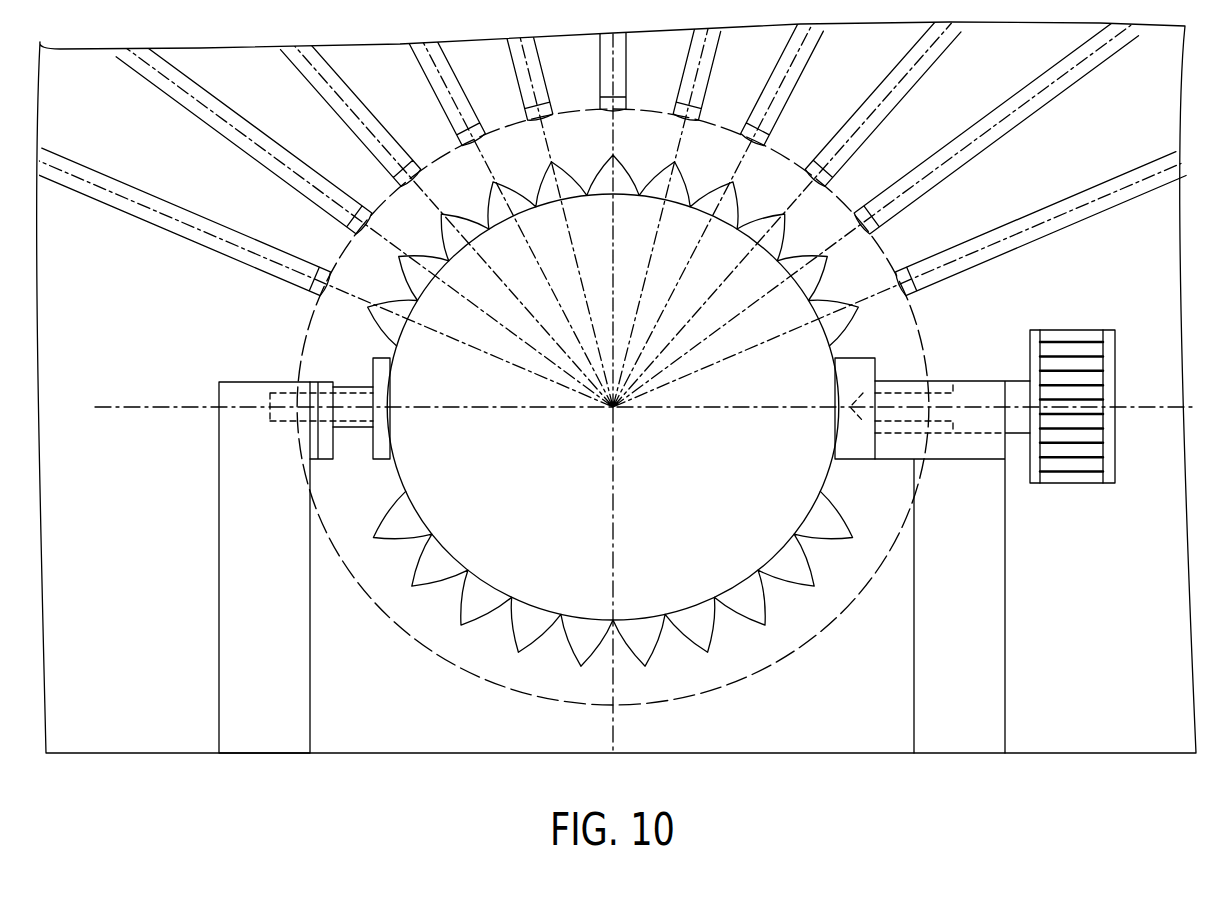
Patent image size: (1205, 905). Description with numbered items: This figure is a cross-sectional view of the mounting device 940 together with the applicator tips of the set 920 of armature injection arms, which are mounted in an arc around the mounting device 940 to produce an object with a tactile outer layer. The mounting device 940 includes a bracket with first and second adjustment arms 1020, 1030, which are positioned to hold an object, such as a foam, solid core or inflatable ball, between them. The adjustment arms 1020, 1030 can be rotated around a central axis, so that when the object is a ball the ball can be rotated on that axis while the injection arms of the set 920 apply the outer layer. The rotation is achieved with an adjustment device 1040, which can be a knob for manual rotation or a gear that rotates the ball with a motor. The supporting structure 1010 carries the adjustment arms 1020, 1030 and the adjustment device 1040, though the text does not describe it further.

The set of armature injection arms 920 is at (203, 245).
The mounting device 940 is at (258, 587).
The support frame 1010 is at (232, 490).
The first adjustment arm 1020 is at (373, 370).
The second adjustment arm 1030 is at (862, 368).
The adjustment device 1040 is at (1080, 336).